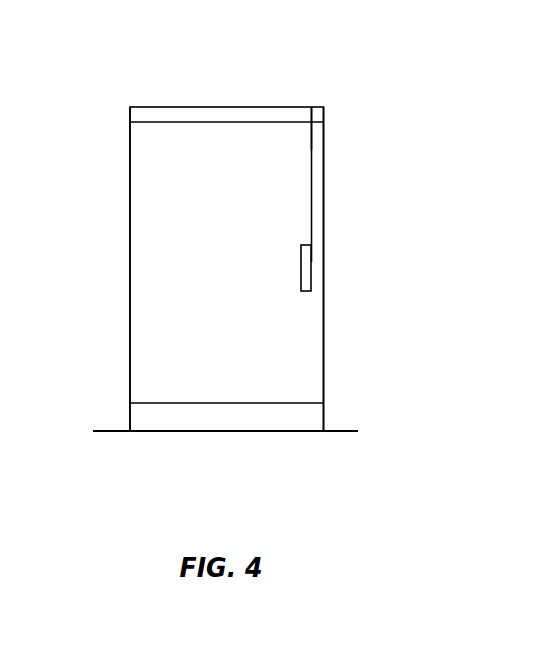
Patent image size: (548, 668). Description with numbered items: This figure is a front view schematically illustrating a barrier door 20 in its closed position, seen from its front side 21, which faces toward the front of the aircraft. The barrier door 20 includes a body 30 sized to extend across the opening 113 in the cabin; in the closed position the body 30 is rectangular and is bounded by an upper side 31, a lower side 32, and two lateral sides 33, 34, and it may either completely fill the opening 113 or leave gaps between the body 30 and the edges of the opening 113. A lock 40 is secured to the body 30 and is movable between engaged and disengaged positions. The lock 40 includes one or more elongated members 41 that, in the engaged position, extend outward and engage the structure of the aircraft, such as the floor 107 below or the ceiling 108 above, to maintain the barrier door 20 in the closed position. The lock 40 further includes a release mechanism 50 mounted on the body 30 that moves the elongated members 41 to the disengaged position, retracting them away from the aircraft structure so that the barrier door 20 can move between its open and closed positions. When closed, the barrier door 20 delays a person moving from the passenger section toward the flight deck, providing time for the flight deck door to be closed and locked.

The barrier door 20 is at (393, 101).
The front side 21 is at (176, 382).
The body 30 is at (153, 192).
The upper side 31 is at (196, 122).
The lower side 32 is at (258, 403).
The lateral side 33 is at (128, 296).
The lateral side 34 is at (324, 278).
The lock 40 is at (300, 195).
The elongated member 41 is at (308, 150).
The release mechanism 50 is at (301, 275).
The floor 107 is at (338, 471).
The ceiling 108 is at (313, 64).
The opening 113 is at (131, 107).